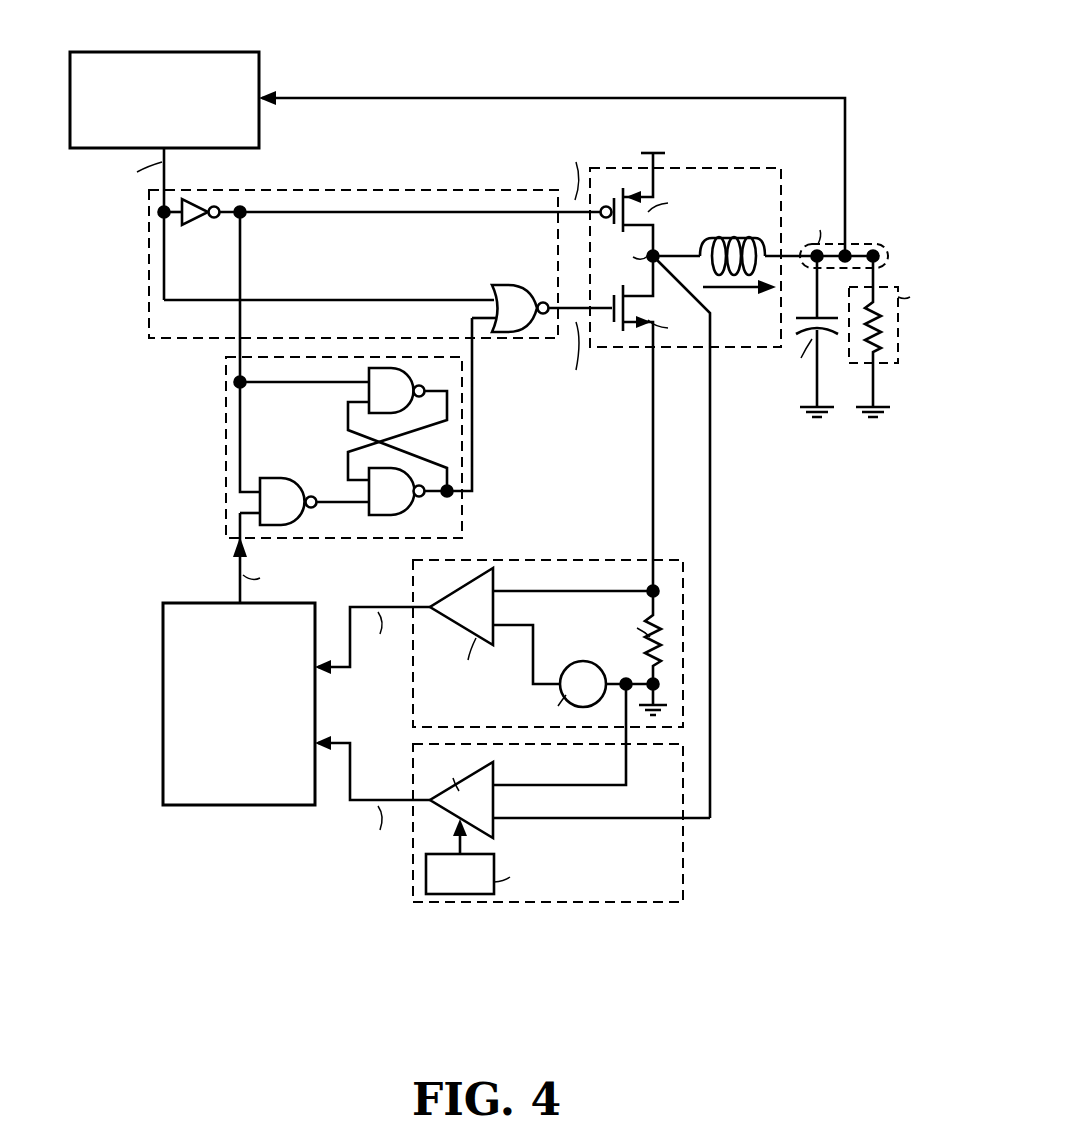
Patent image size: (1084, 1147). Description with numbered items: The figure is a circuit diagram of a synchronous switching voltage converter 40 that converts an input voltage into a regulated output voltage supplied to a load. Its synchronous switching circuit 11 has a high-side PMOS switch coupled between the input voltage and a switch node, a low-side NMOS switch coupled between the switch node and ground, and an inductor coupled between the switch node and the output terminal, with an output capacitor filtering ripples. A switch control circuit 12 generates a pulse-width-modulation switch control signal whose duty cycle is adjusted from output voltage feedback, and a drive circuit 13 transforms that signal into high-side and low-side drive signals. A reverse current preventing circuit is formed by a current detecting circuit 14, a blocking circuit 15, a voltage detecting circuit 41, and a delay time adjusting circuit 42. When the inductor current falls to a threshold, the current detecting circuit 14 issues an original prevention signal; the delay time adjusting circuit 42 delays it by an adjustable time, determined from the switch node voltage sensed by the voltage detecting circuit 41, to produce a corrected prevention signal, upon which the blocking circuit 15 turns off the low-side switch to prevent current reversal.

The synchronous switching circuit 11 is at (735, 348).
The switch control circuit 12 is at (185, 52).
The drive circuit 13 is at (149, 270).
The current detecting circuit 14 is at (634, 560).
The blocking circuit 15 is at (226, 458).
The synchronous switching voltage converter 40 is at (815, 53).
The voltage detecting circuit 41 is at (645, 903).
The delay time adjusting circuit 42 is at (205, 806).